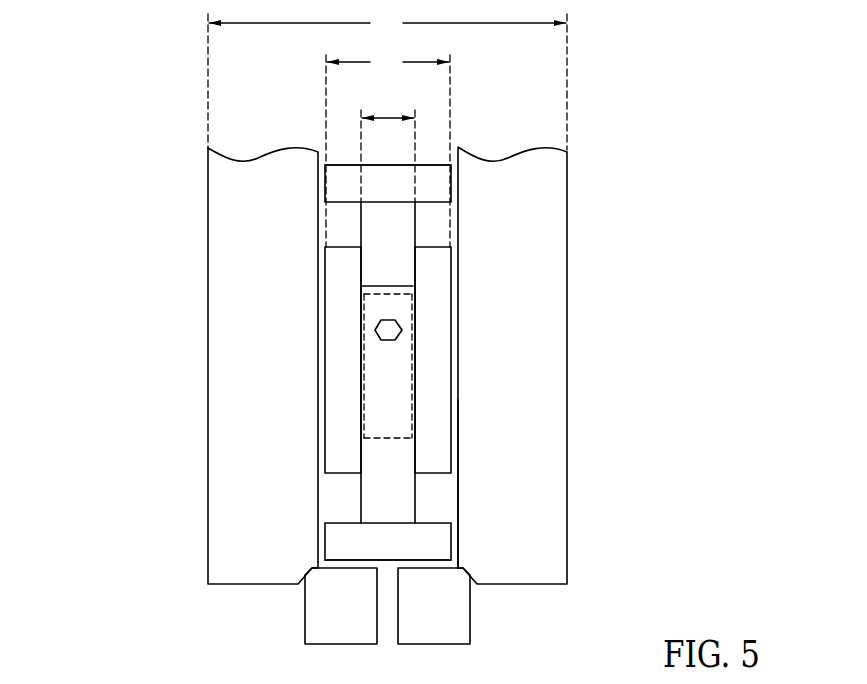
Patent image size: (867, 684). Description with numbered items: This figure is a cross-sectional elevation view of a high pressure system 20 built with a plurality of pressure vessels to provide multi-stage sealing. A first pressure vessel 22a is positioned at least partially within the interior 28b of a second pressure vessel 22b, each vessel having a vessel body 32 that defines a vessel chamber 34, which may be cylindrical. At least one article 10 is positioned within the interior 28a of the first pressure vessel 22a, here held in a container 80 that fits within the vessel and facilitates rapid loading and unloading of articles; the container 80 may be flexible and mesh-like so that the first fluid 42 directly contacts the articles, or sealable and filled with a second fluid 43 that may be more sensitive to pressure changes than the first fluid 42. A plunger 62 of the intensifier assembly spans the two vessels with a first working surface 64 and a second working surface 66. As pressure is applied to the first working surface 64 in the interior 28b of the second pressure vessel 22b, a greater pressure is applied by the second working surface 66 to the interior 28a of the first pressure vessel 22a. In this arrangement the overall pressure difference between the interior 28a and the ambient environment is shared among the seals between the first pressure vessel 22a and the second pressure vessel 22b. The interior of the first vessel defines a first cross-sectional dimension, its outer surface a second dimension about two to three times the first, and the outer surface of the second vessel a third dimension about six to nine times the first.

The high pressure system 20 is at (700, 64).
The article 10 is at (405, 329).
The first pressure vessel 22a is at (436, 424).
The second pressure vessel 22b is at (200, 218).
The interior of the first pressure vessel 28a is at (398, 352).
The interior of the second pressure vessel 28b is at (450, 224).
The vessel body 32 is at (555, 515).
The vessel chamber 34 is at (403, 385).
The first fluid 42 is at (395, 368).
The second fluid 43 is at (397, 307).
The plunger 62 is at (444, 182).
The first working surface 64 is at (349, 165).
The second working surface 66 is at (364, 287).
The container 80 is at (363, 345).